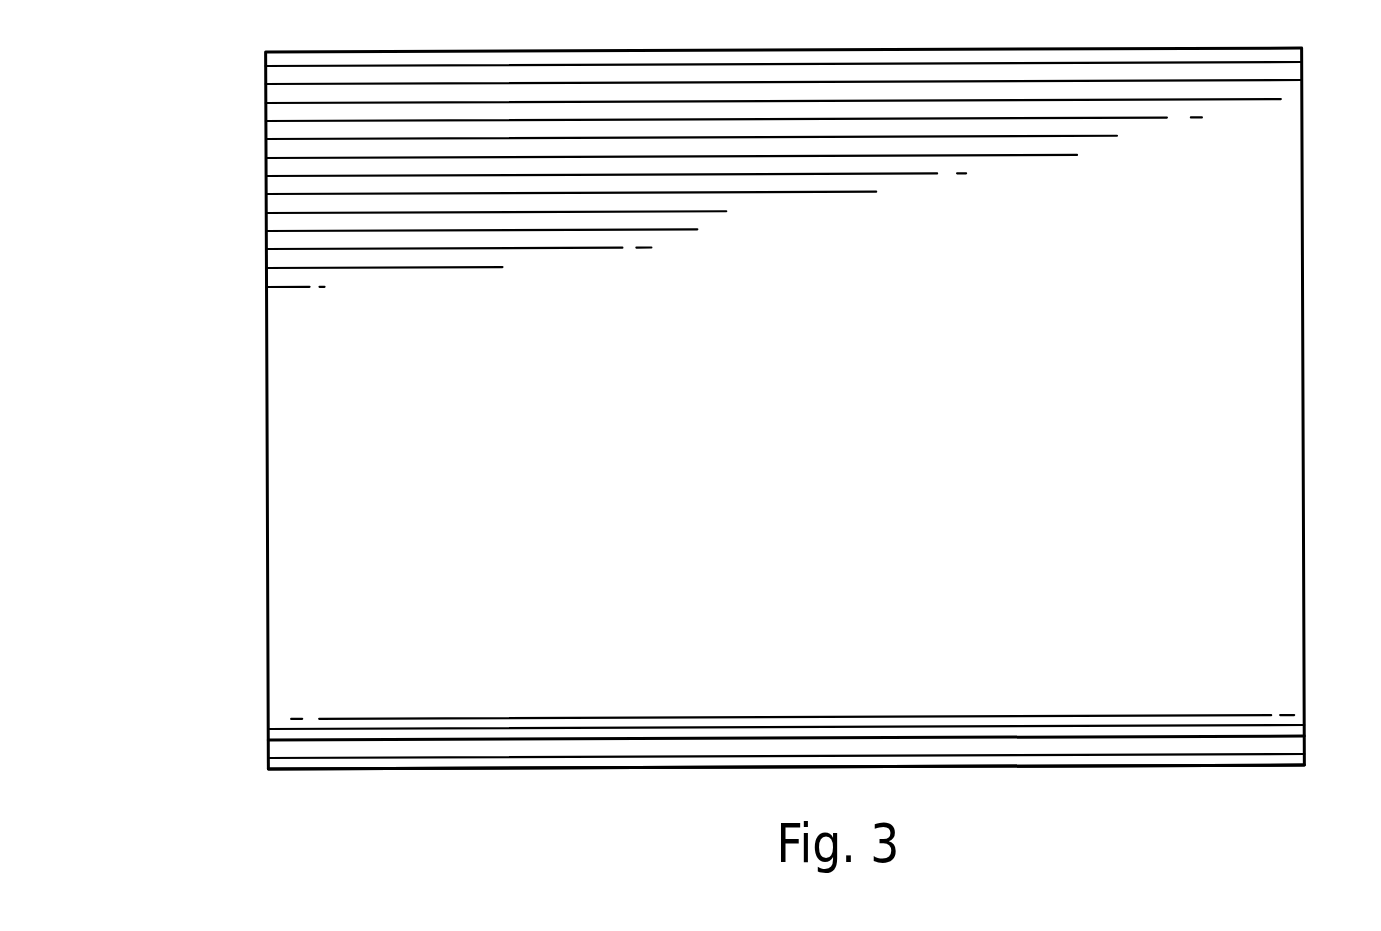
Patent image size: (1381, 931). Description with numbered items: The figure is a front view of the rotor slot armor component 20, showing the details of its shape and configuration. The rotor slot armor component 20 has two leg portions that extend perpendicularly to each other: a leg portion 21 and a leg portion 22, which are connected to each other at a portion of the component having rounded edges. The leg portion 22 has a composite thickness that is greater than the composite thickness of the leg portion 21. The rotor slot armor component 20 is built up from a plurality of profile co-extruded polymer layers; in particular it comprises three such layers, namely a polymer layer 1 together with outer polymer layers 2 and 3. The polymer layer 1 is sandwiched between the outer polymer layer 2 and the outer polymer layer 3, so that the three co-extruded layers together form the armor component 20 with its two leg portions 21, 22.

The rotor slot armor component 20 is at (194, 551).
The leg portion 21 is at (253, 47).
The leg portion 22 is at (253, 725).
The polymer layer 1 is at (1288, 746).
The outer polymer layer 2 is at (1297, 730).
The outer polymer layer 3 is at (1287, 760).